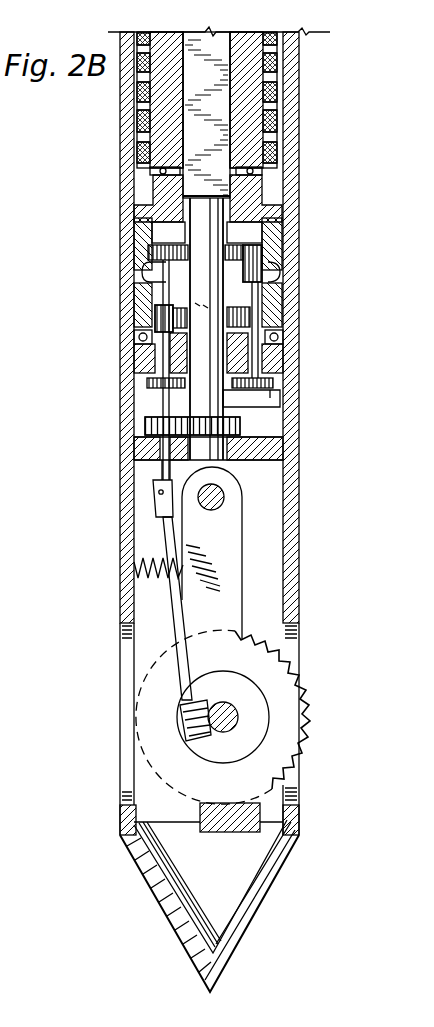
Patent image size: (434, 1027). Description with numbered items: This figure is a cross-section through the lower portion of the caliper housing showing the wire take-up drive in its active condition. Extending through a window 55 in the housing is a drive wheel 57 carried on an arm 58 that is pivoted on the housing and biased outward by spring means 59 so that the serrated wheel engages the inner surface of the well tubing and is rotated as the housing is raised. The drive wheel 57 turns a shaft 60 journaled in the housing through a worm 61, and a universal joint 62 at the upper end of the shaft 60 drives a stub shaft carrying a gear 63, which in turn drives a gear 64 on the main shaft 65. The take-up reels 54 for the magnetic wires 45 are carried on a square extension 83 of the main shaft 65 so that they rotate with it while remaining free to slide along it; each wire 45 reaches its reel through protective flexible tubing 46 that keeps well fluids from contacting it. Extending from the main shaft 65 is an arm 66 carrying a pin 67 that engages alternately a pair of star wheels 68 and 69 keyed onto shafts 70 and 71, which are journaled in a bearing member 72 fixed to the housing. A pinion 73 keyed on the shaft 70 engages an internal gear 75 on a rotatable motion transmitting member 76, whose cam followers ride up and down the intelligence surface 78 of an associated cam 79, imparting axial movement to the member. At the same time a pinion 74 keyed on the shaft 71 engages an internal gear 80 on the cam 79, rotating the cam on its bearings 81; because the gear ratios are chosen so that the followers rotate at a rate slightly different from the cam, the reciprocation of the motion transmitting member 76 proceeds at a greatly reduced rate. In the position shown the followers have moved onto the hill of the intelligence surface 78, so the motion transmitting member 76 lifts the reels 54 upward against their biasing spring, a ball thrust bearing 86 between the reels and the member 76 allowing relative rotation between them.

The magnetic wire 45 is at (300, 163).
The flexible tube 46 is at (275, 150).
The take-up reel 54 is at (300, 59).
The square extension 83 is at (215, 92).
The ball thrust bearing 86 is at (267, 190).
The motion transmitting member 76 is at (140, 218).
The internal gear 75 is at (150, 240).
The drive pinion 73 is at (262, 250).
The intelligence surface 78 is at (150, 272).
The cam 79 is at (140, 296).
The main shaft 65 is at (210, 287).
The bearings 81 is at (160, 336).
The pinion 74 is at (165, 318).
The internal gear 80 is at (245, 320).
The shaft 71 is at (145, 360).
The bearing member 72 is at (282, 350).
The shaft 70 is at (255, 360).
The star wheel 69 is at (160, 383).
The star wheel 68 is at (270, 382).
The pin 67 is at (268, 400).
The gear 63 is at (160, 430).
The arm 66 is at (245, 423).
The gear 64 is at (250, 445).
The arm 58 is at (230, 535).
The universal joint 62 is at (158, 502).
The shaft 60 is at (178, 588).
The spring means 59 is at (148, 565).
The drive wheel 57 is at (283, 690).
The worm 61 is at (180, 722).
The window 55 is at (262, 798).